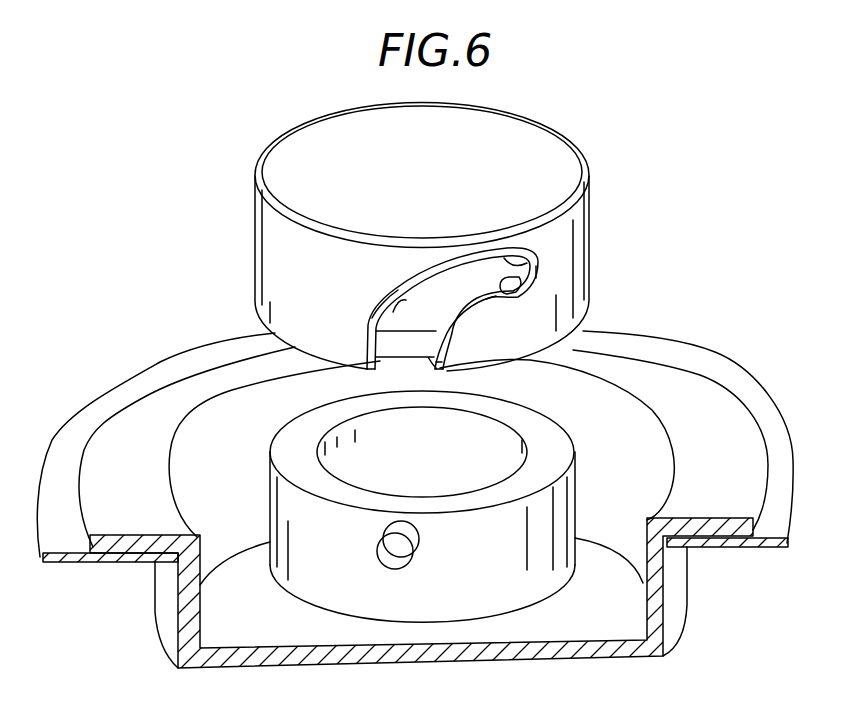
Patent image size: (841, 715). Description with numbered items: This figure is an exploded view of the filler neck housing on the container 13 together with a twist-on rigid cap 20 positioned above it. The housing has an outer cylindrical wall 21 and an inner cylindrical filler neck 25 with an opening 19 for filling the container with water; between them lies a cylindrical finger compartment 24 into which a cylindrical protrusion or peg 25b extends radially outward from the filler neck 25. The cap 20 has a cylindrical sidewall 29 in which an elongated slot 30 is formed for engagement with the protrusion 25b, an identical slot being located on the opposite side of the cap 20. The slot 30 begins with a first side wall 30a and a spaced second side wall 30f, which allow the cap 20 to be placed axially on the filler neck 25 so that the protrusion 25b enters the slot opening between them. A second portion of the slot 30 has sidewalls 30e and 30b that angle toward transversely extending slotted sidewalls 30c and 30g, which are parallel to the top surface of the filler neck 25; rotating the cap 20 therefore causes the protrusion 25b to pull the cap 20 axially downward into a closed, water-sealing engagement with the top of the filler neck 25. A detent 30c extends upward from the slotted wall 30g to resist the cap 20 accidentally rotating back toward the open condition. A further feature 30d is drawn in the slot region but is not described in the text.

The container 13 is at (58, 543).
The opening 19 is at (452, 481).
The rigid cap 20 is at (550, 148).
The outer cylindrical wall 21 is at (725, 487).
The cylindrical finger compartment 24 is at (635, 481).
The inner cylindrical filler neck 25 is at (293, 437).
The cylindrical protrusion 25b is at (386, 562).
The cylindrical sidewall 29 is at (590, 208).
The elongated slot 30 is at (256, 317).
The first side wall 30a is at (293, 437).
The sidewall 30b is at (373, 320).
The detent 30c is at (537, 268).
The tab fold inner edge 30d is at (540, 276).
The sidewall 30e is at (493, 337).
The second side wall 30f is at (530, 362).
The transversely extending slotted sidewall 30g is at (583, 325).